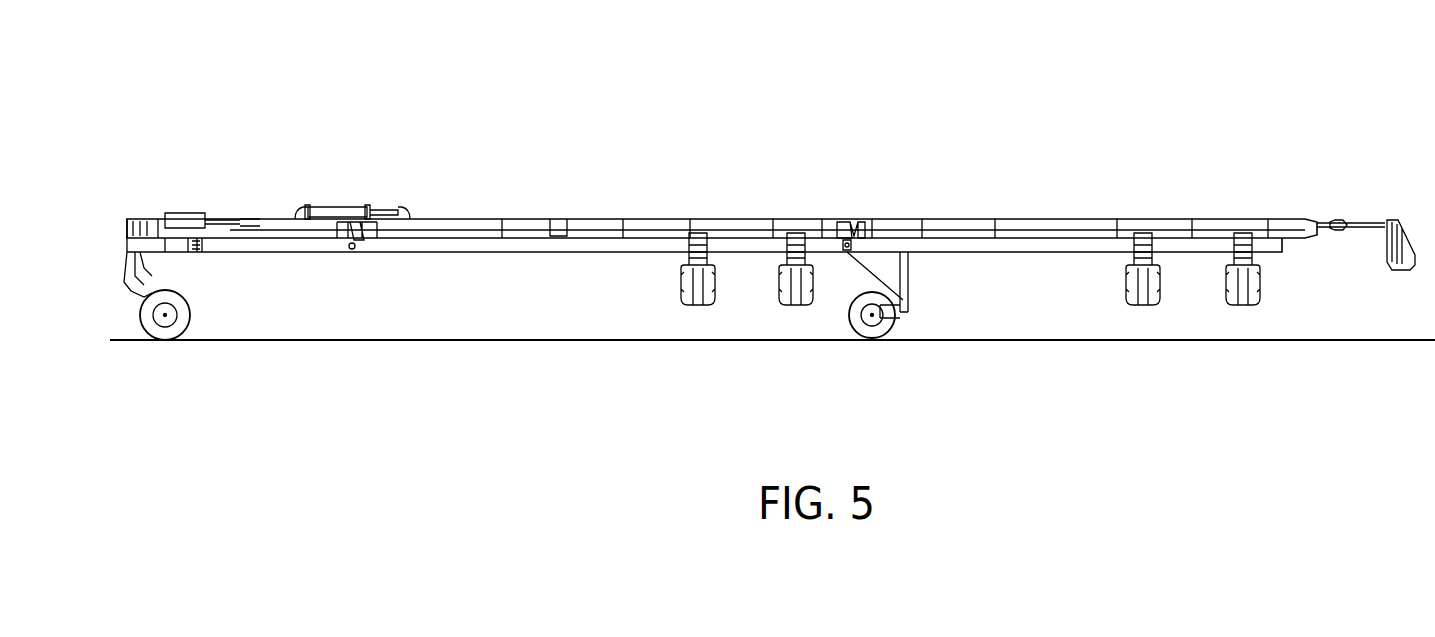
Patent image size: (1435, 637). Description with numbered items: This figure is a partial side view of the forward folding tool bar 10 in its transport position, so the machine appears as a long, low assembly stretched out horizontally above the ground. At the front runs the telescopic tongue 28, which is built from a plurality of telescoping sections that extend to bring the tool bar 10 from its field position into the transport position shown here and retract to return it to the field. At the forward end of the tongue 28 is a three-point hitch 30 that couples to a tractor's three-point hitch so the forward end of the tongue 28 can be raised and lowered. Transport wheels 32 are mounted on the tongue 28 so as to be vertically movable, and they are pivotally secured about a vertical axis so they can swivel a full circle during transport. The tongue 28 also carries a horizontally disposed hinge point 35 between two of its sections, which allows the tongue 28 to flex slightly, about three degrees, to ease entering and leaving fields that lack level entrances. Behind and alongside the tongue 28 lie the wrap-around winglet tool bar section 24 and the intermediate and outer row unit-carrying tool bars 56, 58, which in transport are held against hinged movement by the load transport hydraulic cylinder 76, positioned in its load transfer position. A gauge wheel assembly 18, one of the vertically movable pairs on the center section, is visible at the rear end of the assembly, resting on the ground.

The forward folding tool bar 10 is at (1078, 152).
The gauge wheel assembly 18 is at (188, 305).
The wrap-around winglet tool bar section 24 is at (300, 228).
The telescopic tongue 28 is at (1340, 243).
The three-point hitch 30 is at (1381, 188).
The transport wheels 32 is at (910, 326).
The hinge point 35 is at (850, 220).
The intermediate row unit-carrying tool bar 56 is at (588, 248).
The outer row unit-carrying tool bar 58 is at (1050, 243).
The load transport hydraulic cylinder 76 is at (343, 206).